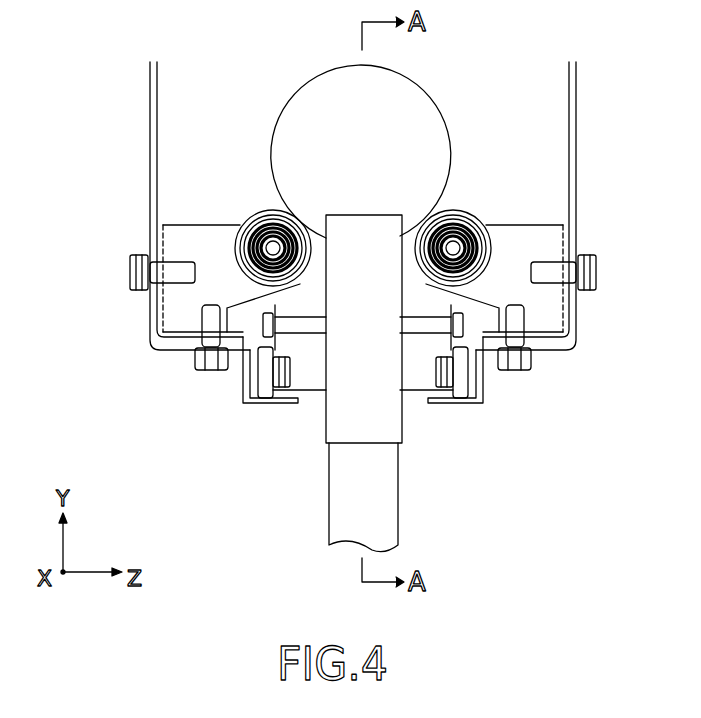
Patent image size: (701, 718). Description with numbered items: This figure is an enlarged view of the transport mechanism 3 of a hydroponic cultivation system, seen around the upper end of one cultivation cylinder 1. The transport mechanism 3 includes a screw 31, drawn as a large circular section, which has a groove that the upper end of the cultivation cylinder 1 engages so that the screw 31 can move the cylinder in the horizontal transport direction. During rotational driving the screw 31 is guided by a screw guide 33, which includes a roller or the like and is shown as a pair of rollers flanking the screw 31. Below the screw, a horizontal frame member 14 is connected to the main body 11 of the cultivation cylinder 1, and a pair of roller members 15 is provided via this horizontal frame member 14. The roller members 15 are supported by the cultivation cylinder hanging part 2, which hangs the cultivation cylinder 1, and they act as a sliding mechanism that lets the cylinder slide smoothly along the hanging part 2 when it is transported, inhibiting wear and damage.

The transport mechanism 3 is at (377, 201).
The screw 31 is at (437, 148).
The screw guide 33 is at (483, 226).
The roller members 15 is at (258, 387).
The cultivation cylinder hanging part 2 is at (275, 405).
The horizontal frame member 14 is at (402, 397).
The cultivation cylinder 1 is at (419, 497).
The main body 11 is at (398, 507).